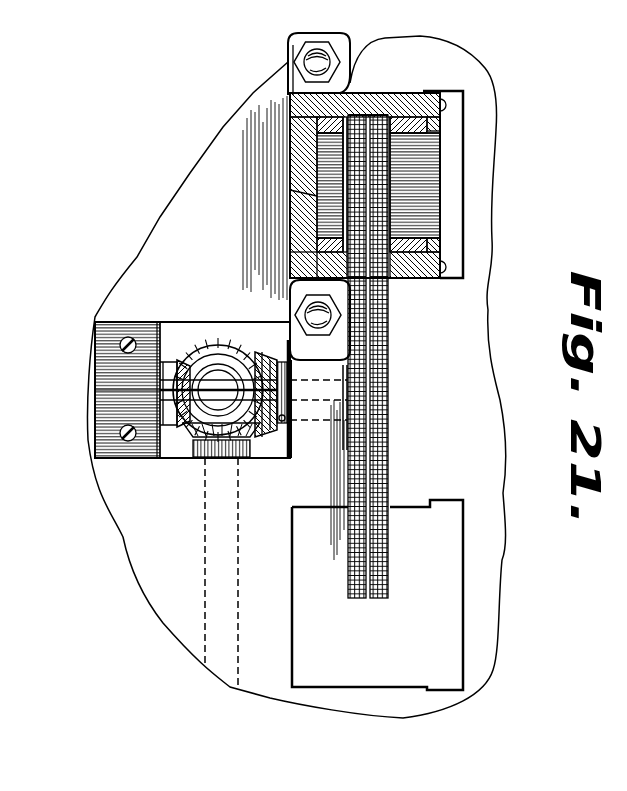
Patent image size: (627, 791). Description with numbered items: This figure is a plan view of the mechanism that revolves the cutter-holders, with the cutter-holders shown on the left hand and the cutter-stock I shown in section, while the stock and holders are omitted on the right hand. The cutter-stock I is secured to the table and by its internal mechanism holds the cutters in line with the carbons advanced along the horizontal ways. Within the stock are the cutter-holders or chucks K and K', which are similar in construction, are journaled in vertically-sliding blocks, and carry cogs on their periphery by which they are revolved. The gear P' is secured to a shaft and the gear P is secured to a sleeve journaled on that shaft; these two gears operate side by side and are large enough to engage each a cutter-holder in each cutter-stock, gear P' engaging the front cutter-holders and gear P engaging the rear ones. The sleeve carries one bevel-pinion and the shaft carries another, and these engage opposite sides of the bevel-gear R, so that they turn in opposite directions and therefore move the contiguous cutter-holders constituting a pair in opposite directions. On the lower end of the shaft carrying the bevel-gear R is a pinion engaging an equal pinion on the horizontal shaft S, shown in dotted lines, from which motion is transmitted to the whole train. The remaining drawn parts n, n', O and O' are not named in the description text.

The cutter-stock I is at (300, 147).
The cutter-holder K is at (347, 184).
The cutter-holder K' is at (443, 184).
The lead screw shaft n is at (332, 333).
The gear shaft n' is at (218, 341).
The bevel-gear R is at (233, 348).
The bevel pinion O is at (178, 383).
The bevel pinion O' is at (261, 387).
The horizontal shaft S is at (276, 533).
The gear P is at (319, 460).
The gear P' is at (377, 586).